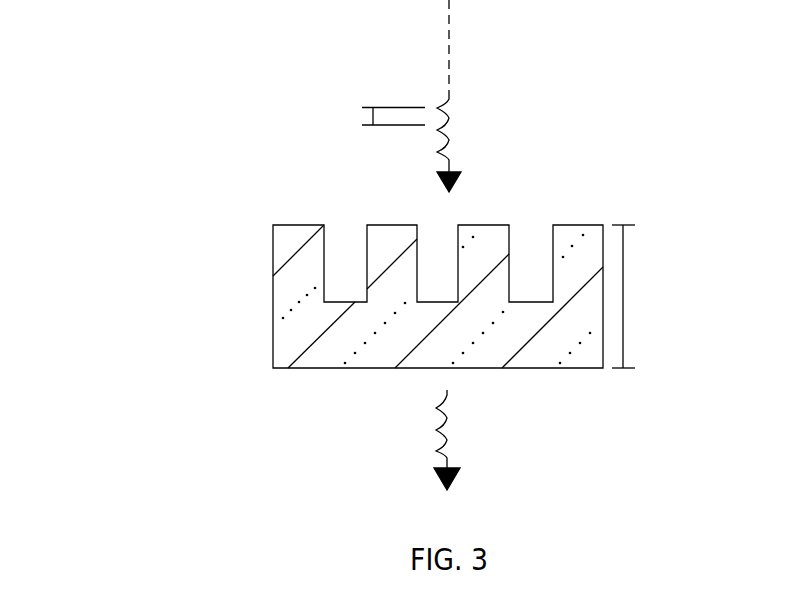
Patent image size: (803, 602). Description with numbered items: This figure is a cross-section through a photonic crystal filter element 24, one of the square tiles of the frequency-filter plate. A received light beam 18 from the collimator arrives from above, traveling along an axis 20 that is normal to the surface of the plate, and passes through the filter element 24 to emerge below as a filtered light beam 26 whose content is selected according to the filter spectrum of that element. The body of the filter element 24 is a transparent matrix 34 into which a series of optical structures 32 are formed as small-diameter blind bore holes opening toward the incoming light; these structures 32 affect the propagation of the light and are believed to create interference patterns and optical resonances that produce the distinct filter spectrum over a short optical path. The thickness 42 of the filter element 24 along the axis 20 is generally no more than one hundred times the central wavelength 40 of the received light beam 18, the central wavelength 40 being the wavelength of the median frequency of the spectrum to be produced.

The received light beam 18 is at (452, 134).
The axis 20 is at (449, 52).
The filter element 24 is at (339, 282).
The filtered light beam 26 is at (449, 427).
The optical structures 32 is at (432, 219).
The transparent matrix 34 is at (313, 342).
The central wavelength 40 is at (356, 117).
The thickness 42 is at (623, 305).